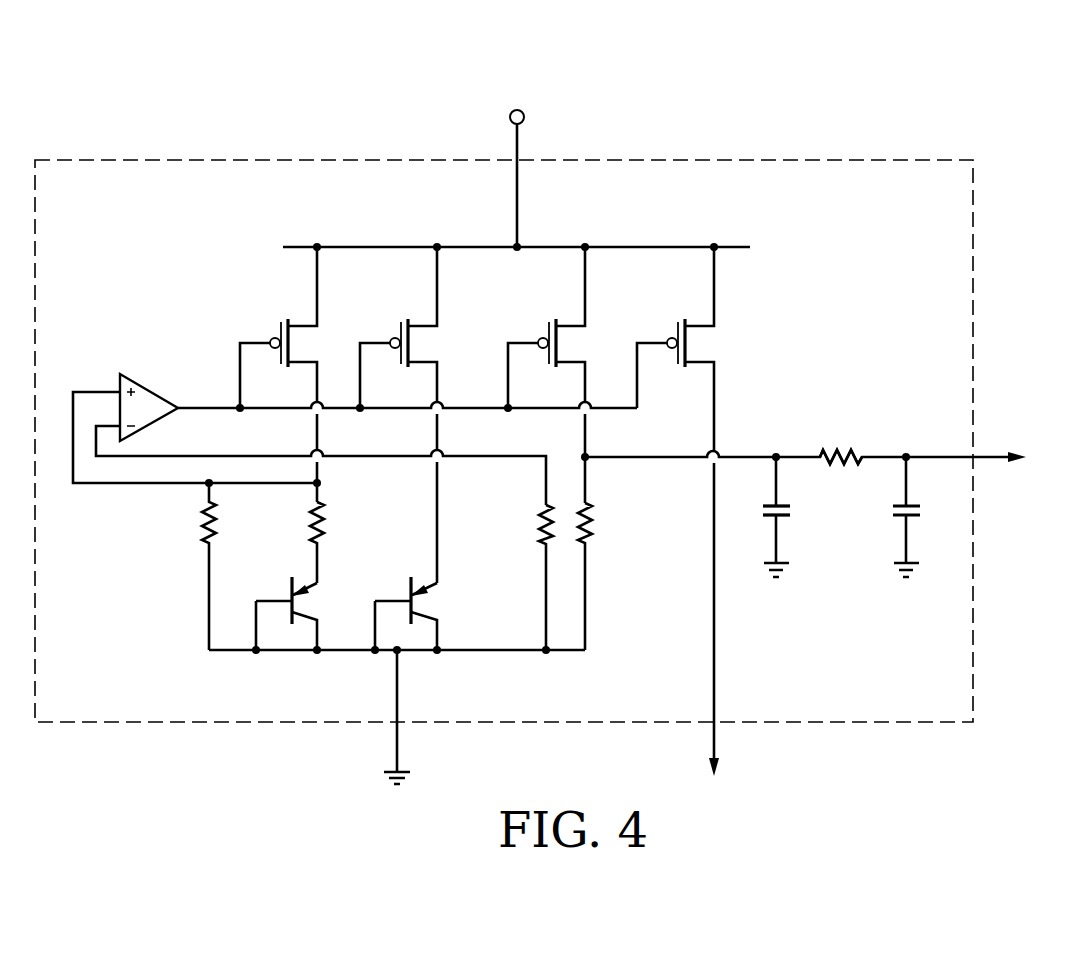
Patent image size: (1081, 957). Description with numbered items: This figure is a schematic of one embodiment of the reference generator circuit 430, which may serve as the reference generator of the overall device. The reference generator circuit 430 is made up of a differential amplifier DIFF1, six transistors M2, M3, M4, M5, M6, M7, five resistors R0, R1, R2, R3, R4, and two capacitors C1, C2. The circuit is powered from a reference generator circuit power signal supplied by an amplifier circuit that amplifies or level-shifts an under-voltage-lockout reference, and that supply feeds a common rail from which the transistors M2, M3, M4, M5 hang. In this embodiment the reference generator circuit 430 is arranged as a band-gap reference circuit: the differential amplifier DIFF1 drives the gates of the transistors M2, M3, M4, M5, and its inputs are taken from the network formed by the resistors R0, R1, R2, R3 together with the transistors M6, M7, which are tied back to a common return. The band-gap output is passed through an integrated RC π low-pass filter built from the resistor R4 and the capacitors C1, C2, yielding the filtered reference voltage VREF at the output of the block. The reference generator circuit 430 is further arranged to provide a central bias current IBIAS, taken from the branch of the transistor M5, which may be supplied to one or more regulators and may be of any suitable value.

The reference generator circuit 430 is at (786, 122).
The differential amplifier DIFF1 is at (152, 368).
The transistor M2 is at (285, 327).
The transistor M3 is at (405, 327).
The transistor M4 is at (553, 327).
The transistor M5 is at (682, 327).
The transistor M6 is at (288, 586).
The transistor M7 is at (408, 586).
The resistor R0 is at (205, 528).
The resistor R1 is at (313, 528).
The resistor R2 is at (542, 530).
The resistor R3 is at (591, 530).
The resistor R4 is at (846, 449).
The capacitor C1 is at (784, 504).
The capacitor C2 is at (914, 504).
The reference voltage VREF is at (811, 448).
The central bias current IBIAS is at (742, 619).